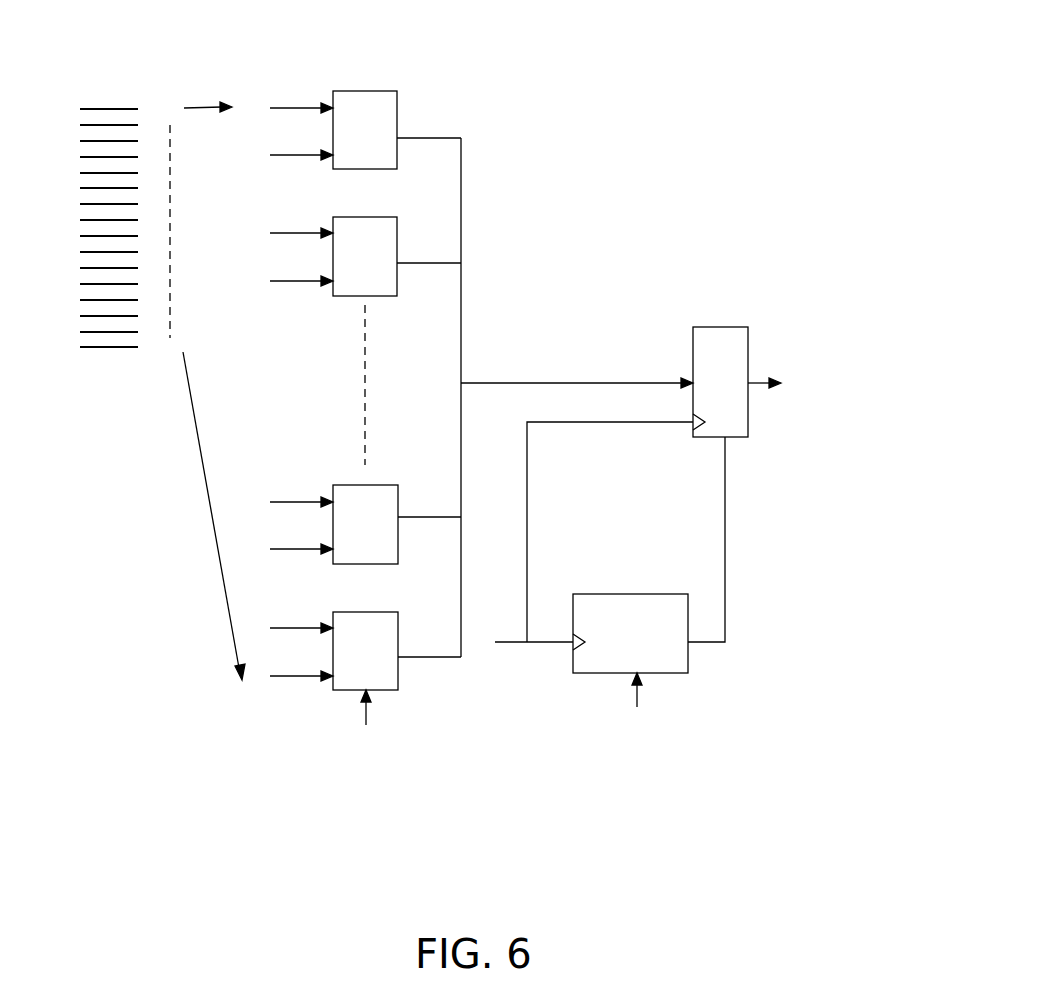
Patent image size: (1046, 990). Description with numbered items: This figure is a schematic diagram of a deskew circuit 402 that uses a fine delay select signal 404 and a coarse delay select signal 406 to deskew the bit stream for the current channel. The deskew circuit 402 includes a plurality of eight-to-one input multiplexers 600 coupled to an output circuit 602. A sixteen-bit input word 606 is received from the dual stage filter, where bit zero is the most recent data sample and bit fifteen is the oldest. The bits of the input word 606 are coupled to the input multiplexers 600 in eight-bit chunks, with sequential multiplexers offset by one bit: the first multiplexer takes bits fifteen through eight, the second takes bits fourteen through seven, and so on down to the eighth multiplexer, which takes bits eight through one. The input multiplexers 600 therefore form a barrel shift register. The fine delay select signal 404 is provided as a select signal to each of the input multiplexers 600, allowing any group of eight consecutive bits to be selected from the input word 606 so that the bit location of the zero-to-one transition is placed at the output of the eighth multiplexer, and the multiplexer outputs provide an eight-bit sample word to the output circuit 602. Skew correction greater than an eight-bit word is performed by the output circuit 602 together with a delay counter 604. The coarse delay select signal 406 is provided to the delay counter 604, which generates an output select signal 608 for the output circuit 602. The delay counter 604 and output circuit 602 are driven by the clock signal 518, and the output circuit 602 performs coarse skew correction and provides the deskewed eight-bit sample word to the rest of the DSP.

The 16-bit input word 606 is at (56, 92).
The deskew circuit 402 is at (735, 108).
The 8-to-1 input multiplexers 600 is at (381, 138).
The fine delay select signal 404 is at (394, 804).
The output circuit 602 is at (715, 327).
The clock signal 518 is at (548, 648).
The delay counter 604 is at (630, 594).
The output select signal 608 is at (725, 512).
The coarse delay select signal 406 is at (627, 804).